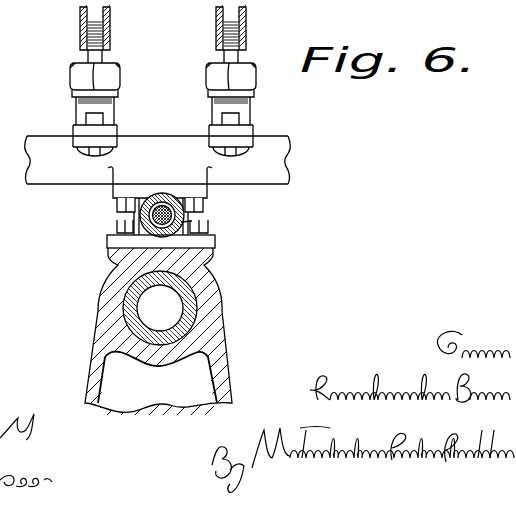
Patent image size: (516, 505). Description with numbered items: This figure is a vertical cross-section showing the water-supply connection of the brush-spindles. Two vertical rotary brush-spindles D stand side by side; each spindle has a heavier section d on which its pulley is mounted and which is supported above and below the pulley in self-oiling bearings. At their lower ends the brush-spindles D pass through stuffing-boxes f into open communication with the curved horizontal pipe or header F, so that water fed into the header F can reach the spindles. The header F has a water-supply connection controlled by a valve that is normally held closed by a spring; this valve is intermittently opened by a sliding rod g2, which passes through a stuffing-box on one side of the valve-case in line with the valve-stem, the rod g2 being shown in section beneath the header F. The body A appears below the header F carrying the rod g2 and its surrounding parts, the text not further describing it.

The section of brush-spindle d is at (110, 34).
The brush-spindle D is at (110, 63).
The stuffing-box f is at (78, 115).
The pipe or header F is at (157, 146).
The sliding rod g2 is at (164, 195).
The bearing block body A is at (96, 337).